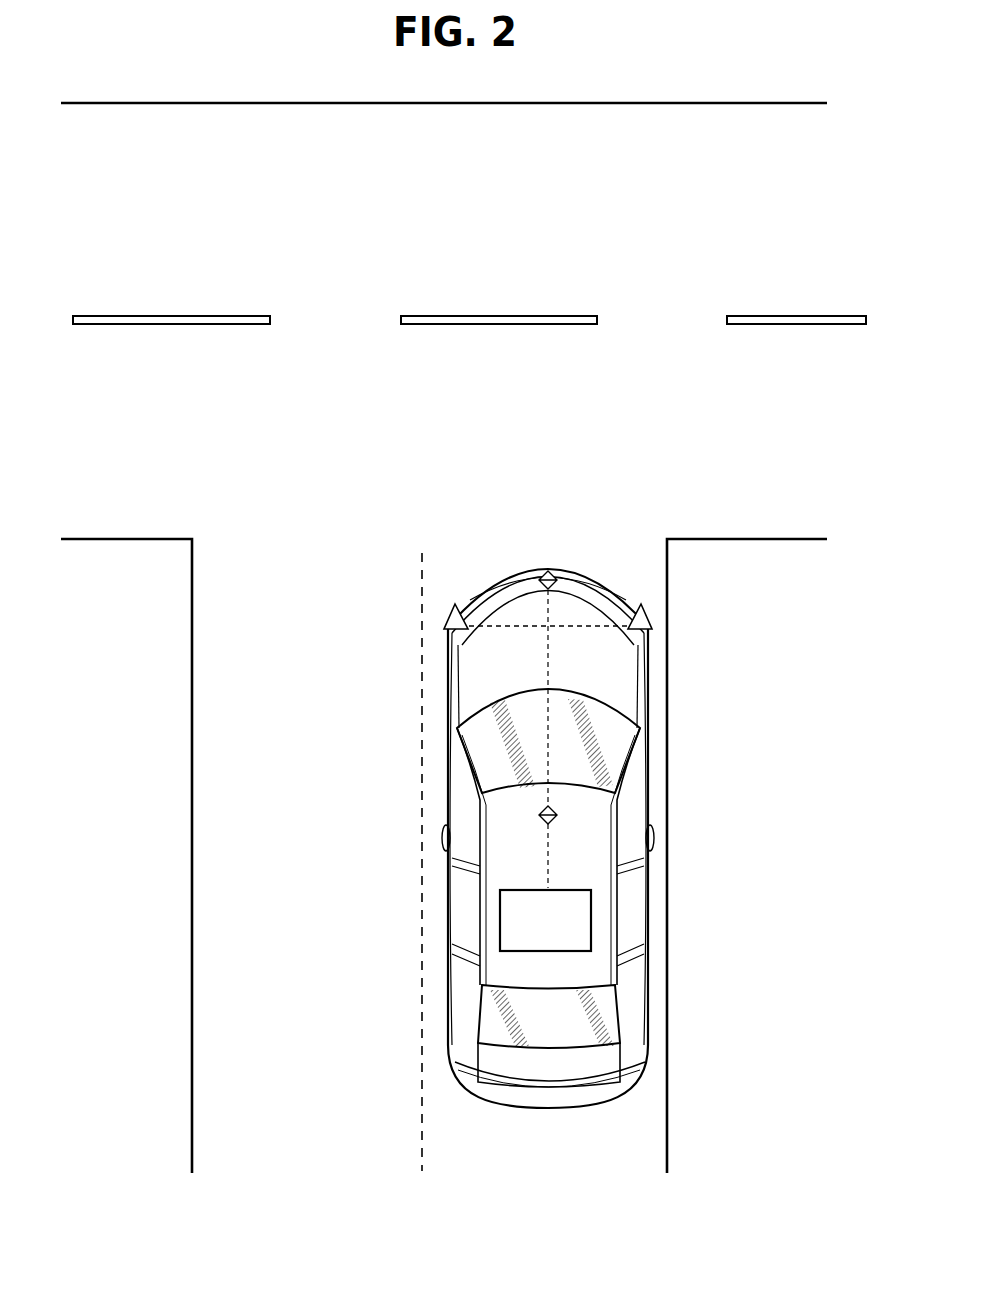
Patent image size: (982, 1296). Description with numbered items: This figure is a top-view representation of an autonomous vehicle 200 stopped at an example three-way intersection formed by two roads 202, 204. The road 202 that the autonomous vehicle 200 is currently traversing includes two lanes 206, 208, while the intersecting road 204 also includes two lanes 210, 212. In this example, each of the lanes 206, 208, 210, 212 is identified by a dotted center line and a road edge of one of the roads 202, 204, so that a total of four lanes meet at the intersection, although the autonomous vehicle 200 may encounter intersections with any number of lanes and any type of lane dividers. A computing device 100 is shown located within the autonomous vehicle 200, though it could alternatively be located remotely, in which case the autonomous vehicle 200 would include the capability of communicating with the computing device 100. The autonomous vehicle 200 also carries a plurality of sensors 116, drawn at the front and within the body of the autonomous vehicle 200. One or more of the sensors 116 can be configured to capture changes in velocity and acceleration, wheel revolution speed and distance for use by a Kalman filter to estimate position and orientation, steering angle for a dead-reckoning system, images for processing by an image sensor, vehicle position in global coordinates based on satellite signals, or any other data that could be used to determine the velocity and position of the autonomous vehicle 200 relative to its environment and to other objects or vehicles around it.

The computing device 100 is at (566, 952).
The sensors 116 is at (452, 614).
The autonomous vehicle 200 is at (650, 689).
The road 202 is at (186, 845).
The intersecting road 204 is at (752, 92).
The lane 206 is at (562, 1156).
The lane 208 is at (327, 1156).
The lane 210 is at (133, 456).
The lane 212 is at (132, 237).